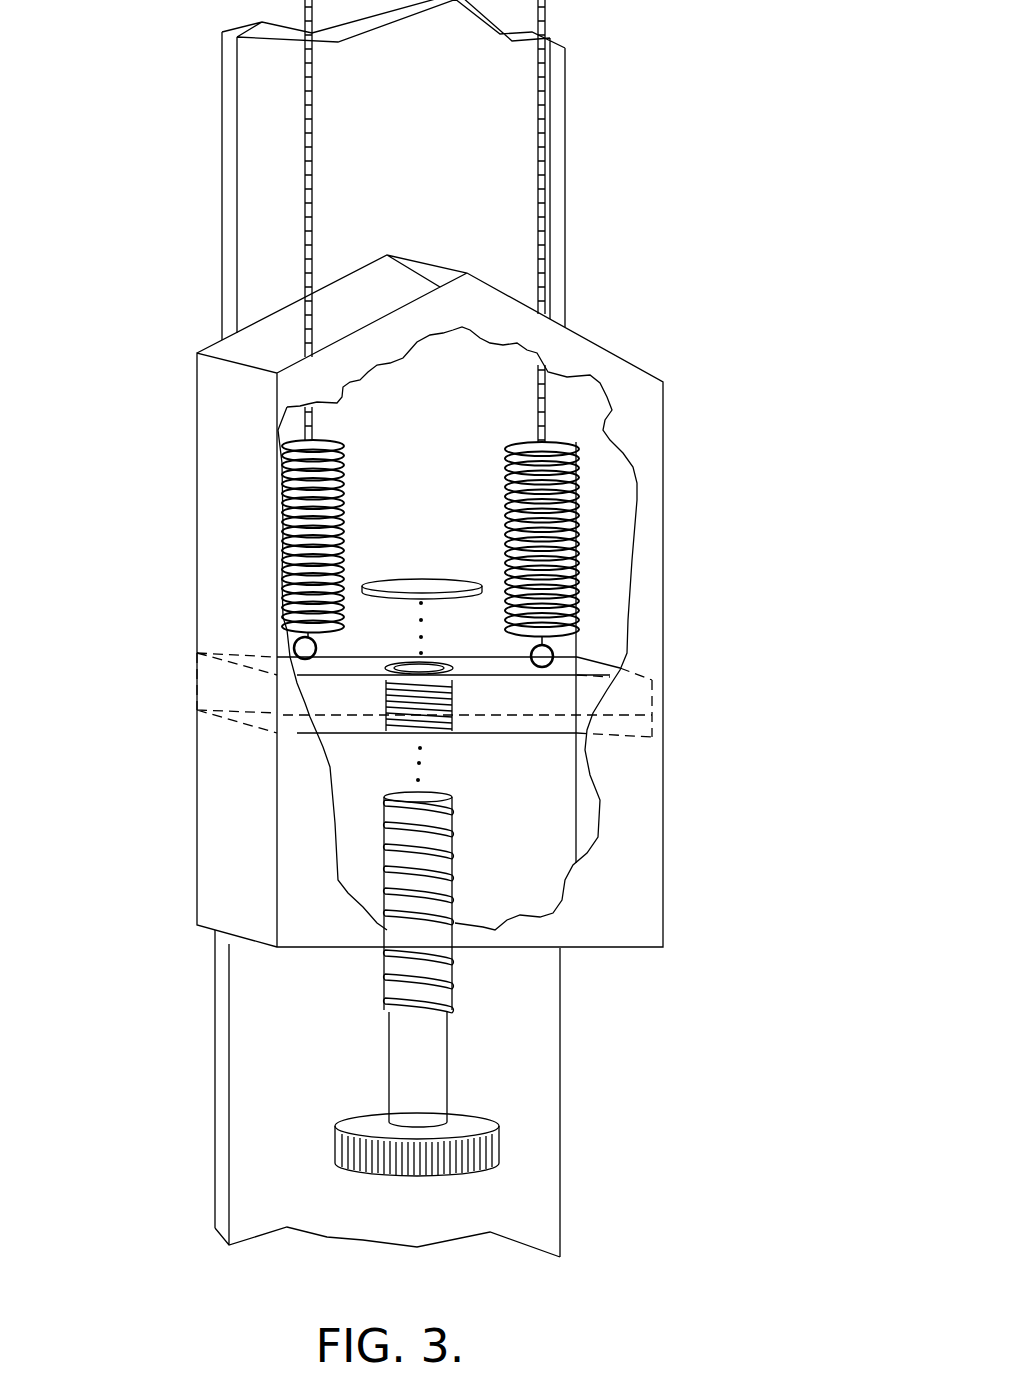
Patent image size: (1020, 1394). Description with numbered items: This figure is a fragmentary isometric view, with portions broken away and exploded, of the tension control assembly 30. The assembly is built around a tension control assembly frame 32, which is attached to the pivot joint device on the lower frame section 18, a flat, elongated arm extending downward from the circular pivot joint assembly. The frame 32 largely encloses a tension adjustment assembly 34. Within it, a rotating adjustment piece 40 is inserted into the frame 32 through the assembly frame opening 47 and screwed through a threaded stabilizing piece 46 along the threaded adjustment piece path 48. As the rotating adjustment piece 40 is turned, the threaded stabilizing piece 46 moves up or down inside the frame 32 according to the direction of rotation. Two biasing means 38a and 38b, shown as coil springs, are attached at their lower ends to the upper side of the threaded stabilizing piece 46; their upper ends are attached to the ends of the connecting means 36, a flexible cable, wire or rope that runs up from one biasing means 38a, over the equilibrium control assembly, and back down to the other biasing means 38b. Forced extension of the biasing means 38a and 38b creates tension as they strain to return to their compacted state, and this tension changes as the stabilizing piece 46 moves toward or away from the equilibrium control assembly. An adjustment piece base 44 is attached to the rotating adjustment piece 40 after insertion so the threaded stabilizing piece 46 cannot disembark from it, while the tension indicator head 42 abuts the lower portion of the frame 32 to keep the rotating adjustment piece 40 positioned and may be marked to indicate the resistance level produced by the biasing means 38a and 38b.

The lower frame section 18 is at (538, 1043).
The tension control assembly 30 is at (849, 110).
The tension control assembly frame 32 is at (665, 428).
The tension adjustment assembly 34 is at (538, 818).
The connecting means 36 is at (313, 88).
The biasing means 38a is at (285, 577).
The biasing means 38b is at (510, 612).
The rotating adjustment piece 40 is at (388, 988).
The tension indicator head 42 is at (335, 1148).
The adjustment piece base 44 is at (417, 583).
The threaded stabilizing piece 46 is at (580, 708).
The assembly frame opening 47 is at (390, 923).
The threaded adjustment piece path 48 is at (417, 733).